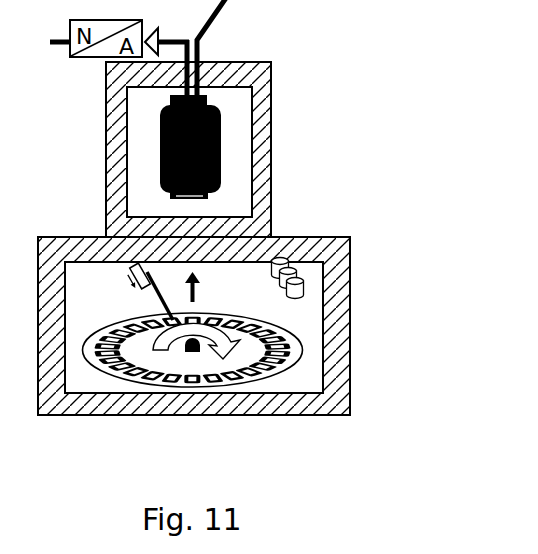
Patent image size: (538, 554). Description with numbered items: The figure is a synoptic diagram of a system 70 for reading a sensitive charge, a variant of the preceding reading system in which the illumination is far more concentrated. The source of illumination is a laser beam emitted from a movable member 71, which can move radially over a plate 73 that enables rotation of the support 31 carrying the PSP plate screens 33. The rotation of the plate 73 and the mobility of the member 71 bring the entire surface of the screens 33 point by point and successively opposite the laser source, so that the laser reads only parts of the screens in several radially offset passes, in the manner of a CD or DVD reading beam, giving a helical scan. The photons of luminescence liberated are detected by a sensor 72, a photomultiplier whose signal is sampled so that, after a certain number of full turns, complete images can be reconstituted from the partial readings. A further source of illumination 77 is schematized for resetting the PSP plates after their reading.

The support 31 is at (108, 370).
The sample carrier tiles 33 is at (223, 312).
The system 70 is at (240, 149).
The movable member 71 is at (142, 297).
The sensor 72 is at (212, 163).
The plate 73 is at (287, 360).
The source of illumination 77 is at (304, 288).